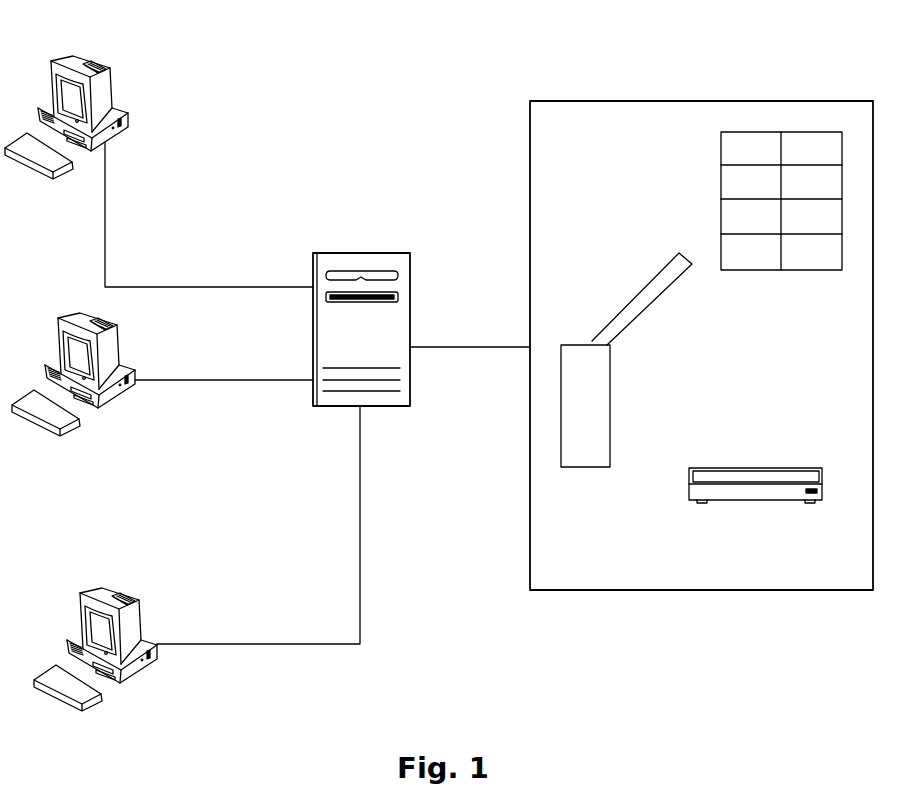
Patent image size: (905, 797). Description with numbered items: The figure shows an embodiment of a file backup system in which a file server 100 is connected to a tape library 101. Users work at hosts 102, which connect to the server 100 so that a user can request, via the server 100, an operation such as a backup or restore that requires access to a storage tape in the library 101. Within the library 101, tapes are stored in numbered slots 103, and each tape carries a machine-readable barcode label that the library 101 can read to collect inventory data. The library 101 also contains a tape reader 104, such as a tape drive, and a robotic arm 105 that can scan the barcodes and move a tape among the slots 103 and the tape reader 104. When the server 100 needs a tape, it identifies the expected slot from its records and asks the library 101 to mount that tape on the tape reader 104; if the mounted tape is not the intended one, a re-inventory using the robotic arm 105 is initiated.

The file server 100 is at (373, 253).
The tape library 101 is at (530, 537).
The host 102 is at (103, 68).
The numbered slots 103 is at (721, 185).
The tape reader 104 is at (778, 502).
The robotic arm 105 is at (611, 422).